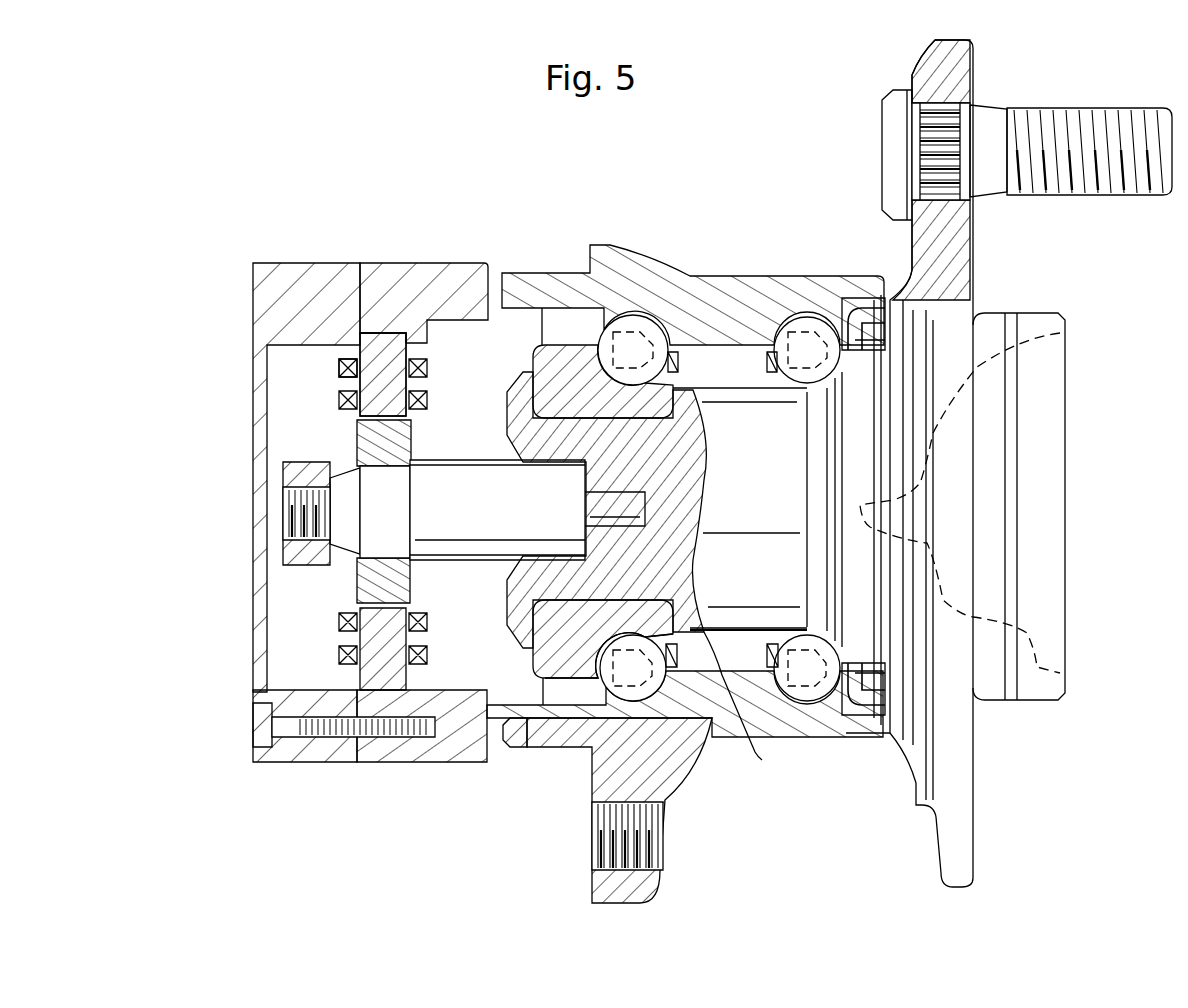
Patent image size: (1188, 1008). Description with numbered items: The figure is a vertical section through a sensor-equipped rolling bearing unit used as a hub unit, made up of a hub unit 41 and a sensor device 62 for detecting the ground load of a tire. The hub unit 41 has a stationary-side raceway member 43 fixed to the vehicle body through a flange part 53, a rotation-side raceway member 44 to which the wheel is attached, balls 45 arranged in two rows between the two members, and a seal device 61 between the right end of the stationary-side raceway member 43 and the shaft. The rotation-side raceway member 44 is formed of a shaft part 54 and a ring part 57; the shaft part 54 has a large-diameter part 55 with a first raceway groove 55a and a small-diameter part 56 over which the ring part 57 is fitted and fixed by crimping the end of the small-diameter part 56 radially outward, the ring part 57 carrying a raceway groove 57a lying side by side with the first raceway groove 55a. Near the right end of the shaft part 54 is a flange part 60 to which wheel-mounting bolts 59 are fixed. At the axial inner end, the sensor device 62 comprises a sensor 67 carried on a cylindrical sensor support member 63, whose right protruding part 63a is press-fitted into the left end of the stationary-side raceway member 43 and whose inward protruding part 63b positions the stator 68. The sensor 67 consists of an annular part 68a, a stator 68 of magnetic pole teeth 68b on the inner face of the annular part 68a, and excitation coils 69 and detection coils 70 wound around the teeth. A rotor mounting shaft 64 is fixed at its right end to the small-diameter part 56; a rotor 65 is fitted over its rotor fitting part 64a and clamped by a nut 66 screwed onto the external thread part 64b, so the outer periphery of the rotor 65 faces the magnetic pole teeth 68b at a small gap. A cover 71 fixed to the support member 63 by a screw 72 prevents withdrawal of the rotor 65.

The hub unit 41 is at (822, 472).
The stationary-side raceway member 43 is at (608, 245).
The rotation-side raceway member 44 is at (787, 372).
The balls 45 is at (600, 727).
The flange part 53 is at (605, 886).
The shaft part 54 is at (793, 480).
The large-diameter part 55 is at (793, 572).
The first raceway groove 55a is at (843, 390).
The small-diameter part 56 is at (694, 545).
The ring part 57 is at (640, 578).
The raceway groove 57a is at (644, 690).
The bolts 59 is at (1052, 130).
The flange part 60 is at (948, 81).
The seal device 61 is at (860, 330).
The sensor device 62 is at (357, 240).
The sensor support member 63 is at (388, 275).
The right protruding part 63a is at (517, 748).
The protruding part 63b is at (428, 688).
The rotor mounting shaft 64 is at (477, 458).
The rotor fitting part 64a is at (383, 545).
The external thread part 64b is at (290, 521).
The rotor 65 is at (362, 440).
The nut 66 is at (300, 467).
The sensor 67 is at (427, 365).
The stator 68 is at (340, 357).
The annular part 68a is at (340, 352).
The magnetic pole teeth 68b is at (340, 389).
The excitation coils 69 is at (342, 402).
The detection coils 70 is at (367, 383).
The cover 71 is at (291, 748).
The screw 72 is at (255, 726).